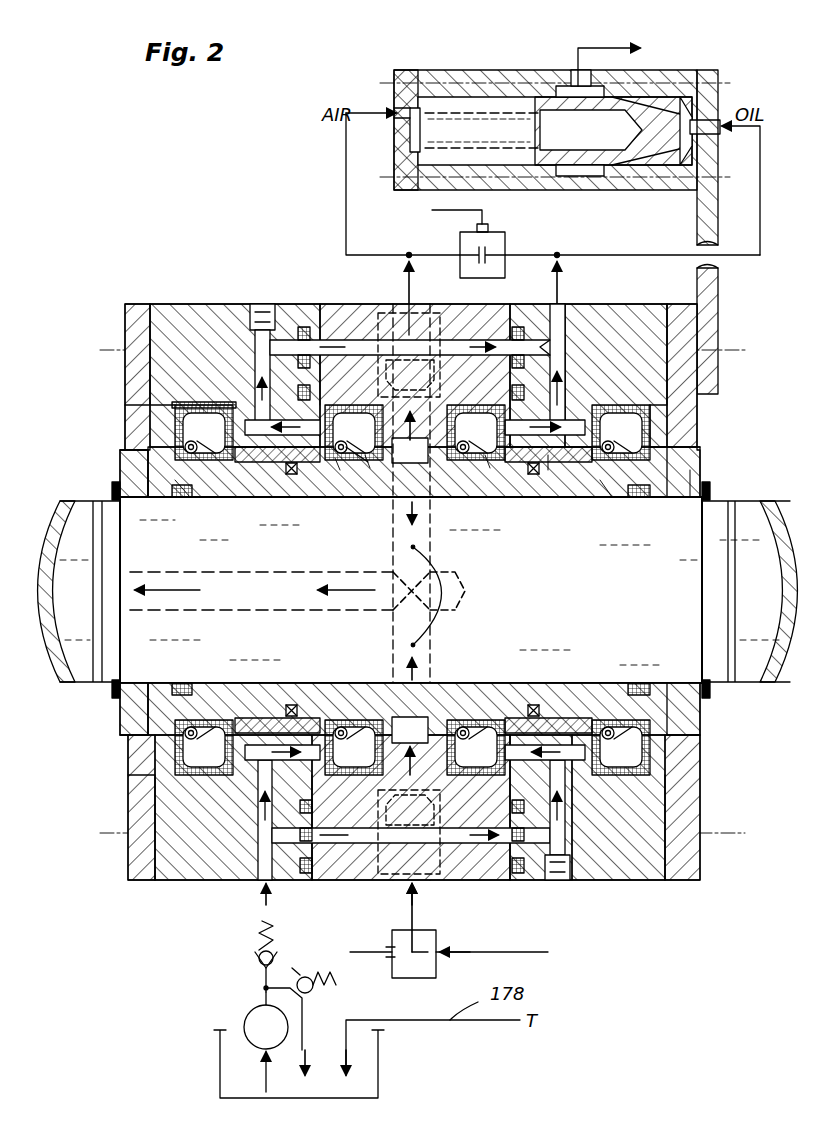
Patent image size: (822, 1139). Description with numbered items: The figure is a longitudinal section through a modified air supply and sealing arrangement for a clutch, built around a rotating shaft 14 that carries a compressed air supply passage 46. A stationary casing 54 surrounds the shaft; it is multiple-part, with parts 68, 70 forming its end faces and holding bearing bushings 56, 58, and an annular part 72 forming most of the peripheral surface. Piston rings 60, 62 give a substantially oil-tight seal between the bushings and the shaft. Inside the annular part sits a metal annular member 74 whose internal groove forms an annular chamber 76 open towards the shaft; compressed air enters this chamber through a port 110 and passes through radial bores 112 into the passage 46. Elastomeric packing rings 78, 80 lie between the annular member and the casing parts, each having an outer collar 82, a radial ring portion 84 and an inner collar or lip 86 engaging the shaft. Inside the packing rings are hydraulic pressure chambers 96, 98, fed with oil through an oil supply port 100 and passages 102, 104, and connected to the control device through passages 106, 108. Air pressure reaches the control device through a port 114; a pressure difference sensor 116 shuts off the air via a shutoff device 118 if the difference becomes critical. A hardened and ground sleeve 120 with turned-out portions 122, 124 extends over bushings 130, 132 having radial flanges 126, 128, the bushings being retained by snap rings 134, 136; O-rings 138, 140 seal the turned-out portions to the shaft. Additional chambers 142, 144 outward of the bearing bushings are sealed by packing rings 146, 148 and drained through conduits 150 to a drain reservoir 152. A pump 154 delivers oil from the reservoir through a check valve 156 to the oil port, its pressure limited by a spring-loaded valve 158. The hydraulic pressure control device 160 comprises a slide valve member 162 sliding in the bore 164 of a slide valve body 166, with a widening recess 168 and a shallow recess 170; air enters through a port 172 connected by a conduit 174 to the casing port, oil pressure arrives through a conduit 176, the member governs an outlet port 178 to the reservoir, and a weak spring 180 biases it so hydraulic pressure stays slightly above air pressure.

The shaft 14 is at (746, 510).
The compressed air supply passage 46 is at (296, 590).
The stationary casing 54 is at (188, 300).
The bearing bushing 56 is at (274, 482).
The bearing bushing 58 is at (549, 462).
The piston ring 60 is at (293, 476).
The piston ring 62 is at (535, 476).
The casing part 68 is at (207, 328).
The casing part 70 is at (612, 322).
The annular part 72 is at (484, 322).
The metal annular member 74 is at (462, 402).
The annular chamber 76 is at (436, 458).
The packing ring 78 is at (340, 472).
The packing ring 80 is at (492, 470).
The outer collar 82 is at (340, 406).
The radial ring portion 84 is at (380, 440).
The collar or lip 86 is at (370, 470).
The hydraulic pressure chamber 96 is at (349, 748).
The hydraulic pressure chamber 98 is at (486, 752).
The oil supply port 100 is at (260, 868).
The passage 102 is at (258, 822).
The passage 104 is at (562, 820).
The passage 106 is at (314, 345).
The passage 108 is at (563, 352).
The port 110 is at (395, 880).
The radial bores 112 is at (452, 592).
The port 114 is at (424, 308).
The pressure difference sensor 116 is at (492, 246).
The shutoff device 118 is at (425, 942).
The sleeve 120 is at (248, 488).
The turned-out portion 122 is at (182, 500).
The turned-out portion 124 is at (610, 502).
The radial flange 126 is at (116, 470).
The radial flange 128 is at (674, 456).
The bushing 130 is at (153, 500).
The bushing 132 is at (690, 502).
The snap ring 134 is at (110, 488).
The snap ring 136 is at (708, 488).
The seal 138 is at (186, 498).
The seal 140 is at (640, 500).
The additional chamber 142 is at (205, 425).
The additional chamber 144 is at (616, 425).
The packing ring 146 is at (193, 403).
The packing ring 148 is at (652, 427).
The conduit 150 is at (585, 752).
The drain reservoir 152 is at (362, 1075).
The pump 154 is at (253, 1027).
The check valve 156 is at (272, 948).
The spring-loaded valve 158 is at (320, 978).
The hydraulic pressure control device 160 is at (525, 67).
The slide valve member 162 is at (662, 138).
The bore 164 is at (525, 130).
The slide valve body 166 is at (476, 80).
The recess 168 is at (662, 100).
The shallow recess 170 is at (708, 122).
The port 172 is at (400, 125).
The conduit 174 is at (350, 240).
The conduit 176 is at (760, 182).
The outlet port 178 is at (592, 48).
The weak spring 180 is at (433, 120).